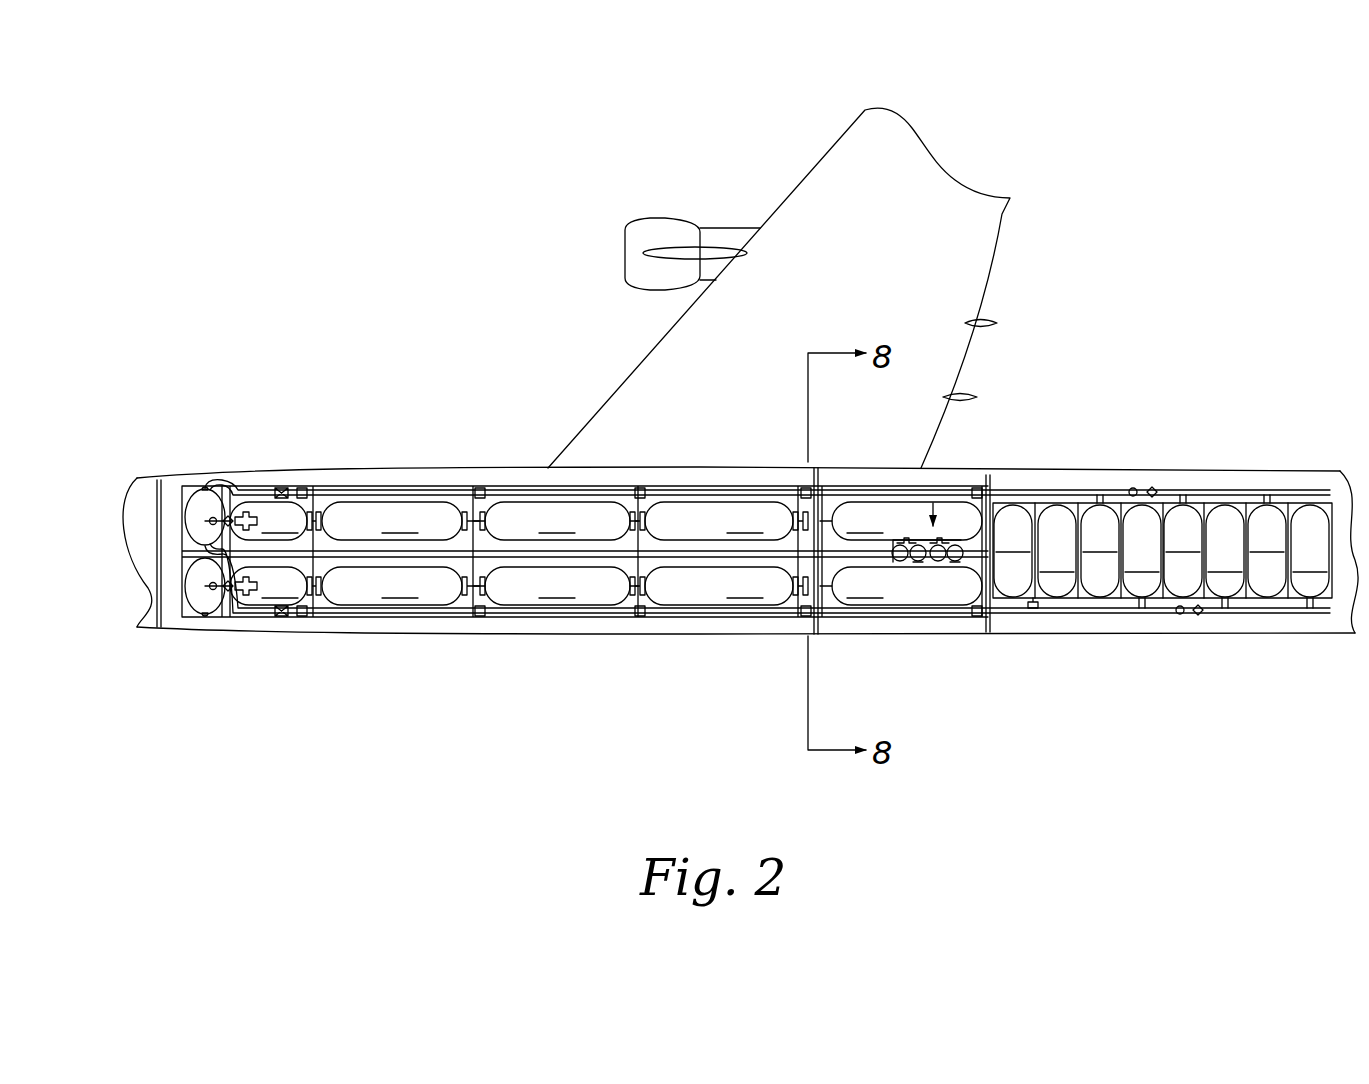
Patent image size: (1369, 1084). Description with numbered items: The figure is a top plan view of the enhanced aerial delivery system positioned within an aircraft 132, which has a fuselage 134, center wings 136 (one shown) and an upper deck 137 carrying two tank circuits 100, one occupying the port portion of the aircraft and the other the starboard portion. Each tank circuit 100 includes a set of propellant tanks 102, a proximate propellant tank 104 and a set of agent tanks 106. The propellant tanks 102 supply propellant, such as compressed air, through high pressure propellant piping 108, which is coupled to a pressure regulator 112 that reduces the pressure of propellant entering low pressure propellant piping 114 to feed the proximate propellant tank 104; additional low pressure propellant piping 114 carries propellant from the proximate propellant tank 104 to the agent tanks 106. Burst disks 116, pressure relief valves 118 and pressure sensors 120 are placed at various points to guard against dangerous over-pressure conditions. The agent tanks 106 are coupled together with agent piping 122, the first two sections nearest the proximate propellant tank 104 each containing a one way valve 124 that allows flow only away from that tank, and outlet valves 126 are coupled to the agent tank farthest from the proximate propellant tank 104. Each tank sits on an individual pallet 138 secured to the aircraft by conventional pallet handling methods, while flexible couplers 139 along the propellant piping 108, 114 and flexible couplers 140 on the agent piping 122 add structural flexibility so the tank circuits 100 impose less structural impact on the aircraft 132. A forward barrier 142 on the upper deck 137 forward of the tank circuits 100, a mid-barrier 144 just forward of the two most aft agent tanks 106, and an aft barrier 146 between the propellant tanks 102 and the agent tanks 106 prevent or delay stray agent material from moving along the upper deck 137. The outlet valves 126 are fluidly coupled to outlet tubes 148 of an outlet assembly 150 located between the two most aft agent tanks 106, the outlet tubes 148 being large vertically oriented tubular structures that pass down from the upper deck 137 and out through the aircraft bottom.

The tank circuit 100 is at (117, 512).
The propellant tanks 102 is at (1161, 551).
The proximate propellant tank 104 is at (195, 533).
The agent tanks 106 is at (606, 553).
The high pressure propellant piping 108 is at (411, 490).
The pressure regulator 112 is at (284, 487).
The low pressure propellant piping 114 is at (127, 497).
The burst disks 116 is at (247, 488).
The pressure relief valves 118 is at (229, 487).
The pressure sensors 120 is at (204, 485).
The agent piping 122 is at (372, 500).
The one way valve 124 is at (315, 500).
The outlet valves 126 is at (893, 542).
The aircraft 132 is at (445, 187).
The fuselage 134 is at (1338, 478).
The center wings 136 is at (842, 160).
The upper deck 137 is at (1340, 636).
The pallets 138 is at (185, 553).
The flexible couplers 139 is at (305, 488).
The flexible couplers 140 is at (505, 500).
The forward barrier 142 is at (171, 476).
The mid-barrier 144 is at (830, 488).
The aft barrier 146 is at (993, 488).
The outlet tubes 148 is at (912, 544).
The outlet assembly 150 is at (931, 500).